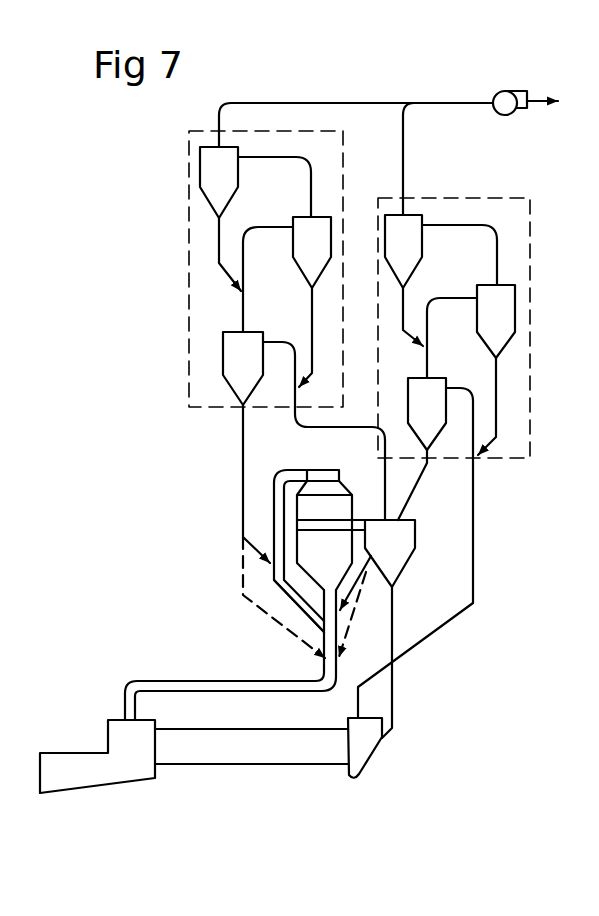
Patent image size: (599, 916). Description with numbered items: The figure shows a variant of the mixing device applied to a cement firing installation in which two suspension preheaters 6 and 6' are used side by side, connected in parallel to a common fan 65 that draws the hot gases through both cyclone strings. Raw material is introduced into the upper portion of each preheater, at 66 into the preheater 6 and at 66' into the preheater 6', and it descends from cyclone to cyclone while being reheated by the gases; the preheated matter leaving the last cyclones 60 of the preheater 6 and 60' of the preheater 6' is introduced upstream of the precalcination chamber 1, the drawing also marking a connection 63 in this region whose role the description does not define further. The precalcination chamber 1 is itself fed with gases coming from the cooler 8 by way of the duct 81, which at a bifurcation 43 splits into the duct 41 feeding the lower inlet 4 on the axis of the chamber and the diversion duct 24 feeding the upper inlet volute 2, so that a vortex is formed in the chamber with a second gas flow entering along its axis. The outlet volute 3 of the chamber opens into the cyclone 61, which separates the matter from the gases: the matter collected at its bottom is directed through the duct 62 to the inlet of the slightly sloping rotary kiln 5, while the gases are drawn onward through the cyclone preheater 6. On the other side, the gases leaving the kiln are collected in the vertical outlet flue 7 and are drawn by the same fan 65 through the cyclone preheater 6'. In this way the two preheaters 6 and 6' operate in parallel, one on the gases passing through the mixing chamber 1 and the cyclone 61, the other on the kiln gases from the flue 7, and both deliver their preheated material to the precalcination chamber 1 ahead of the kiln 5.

The mixing chamber 1 is at (296, 522).
The inlet volute 2 is at (325, 471).
The outlet volute 3 is at (368, 517).
The inlet orifice 4 is at (317, 590).
The rotary kiln 5 is at (242, 750).
The preheater installation 6 is at (233, 269).
The second suspension preheater 6' is at (483, 328).
The vertical flue 7 is at (363, 712).
The cooler 8 is at (45, 753).
The diversion duct 24 is at (296, 601).
The duct 41 is at (350, 608).
The bifurcation 43 is at (326, 638).
The last cyclone of preheater 6 60 is at (193, 368).
The last cyclone of preheater 6' 60' is at (409, 397).
The cyclone 61 is at (410, 522).
The duct 62 is at (393, 606).
The gas pipe to separator 63 is at (388, 474).
The common fan 65 is at (513, 90).
The raw material inlet of preheater 6 66 is at (307, 167).
The raw material inlet of preheater 6' 66' is at (503, 251).
The duct 81 is at (172, 685).